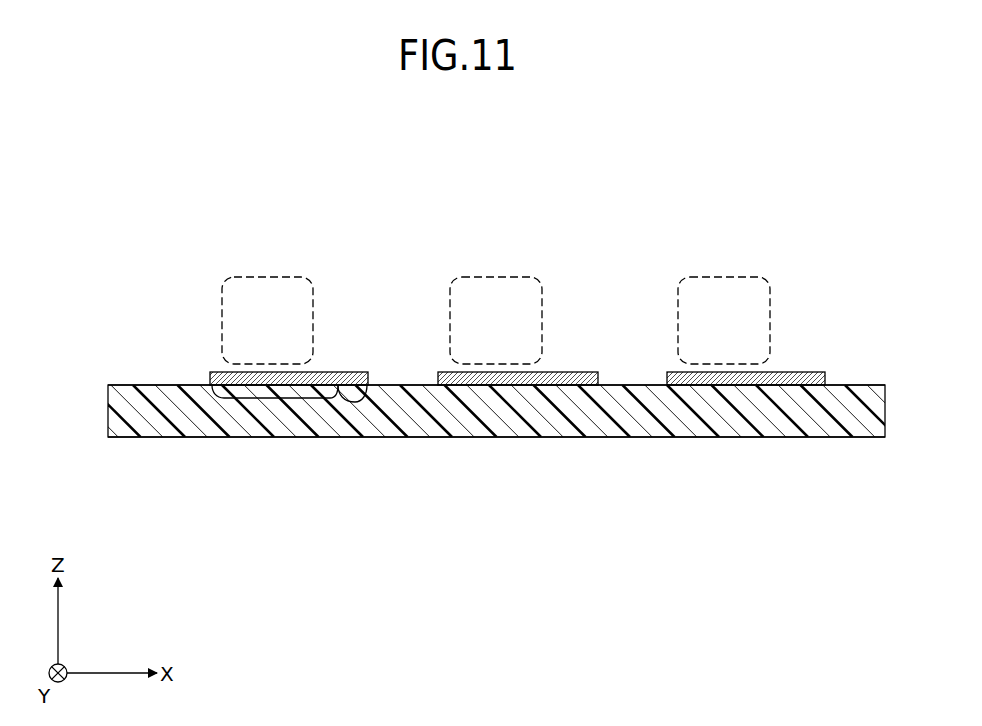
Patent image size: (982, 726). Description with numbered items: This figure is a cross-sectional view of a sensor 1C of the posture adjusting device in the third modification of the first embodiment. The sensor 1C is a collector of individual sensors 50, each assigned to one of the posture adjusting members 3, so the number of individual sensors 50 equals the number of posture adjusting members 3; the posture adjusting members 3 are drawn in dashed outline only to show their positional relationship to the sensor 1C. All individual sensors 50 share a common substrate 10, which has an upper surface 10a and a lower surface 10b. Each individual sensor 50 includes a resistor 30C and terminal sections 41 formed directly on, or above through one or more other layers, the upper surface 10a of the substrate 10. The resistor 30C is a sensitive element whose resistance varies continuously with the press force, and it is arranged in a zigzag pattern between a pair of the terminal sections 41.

The sensor 1C is at (68, 195).
The posture adjusting member 3 is at (722, 278).
The substrate 10 is at (127, 408).
The upper surface 10a is at (125, 386).
The lower surface 10b is at (125, 438).
The resistor 30C is at (275, 402).
The terminal section 41 is at (357, 403).
The individual sensor 50 is at (372, 513).